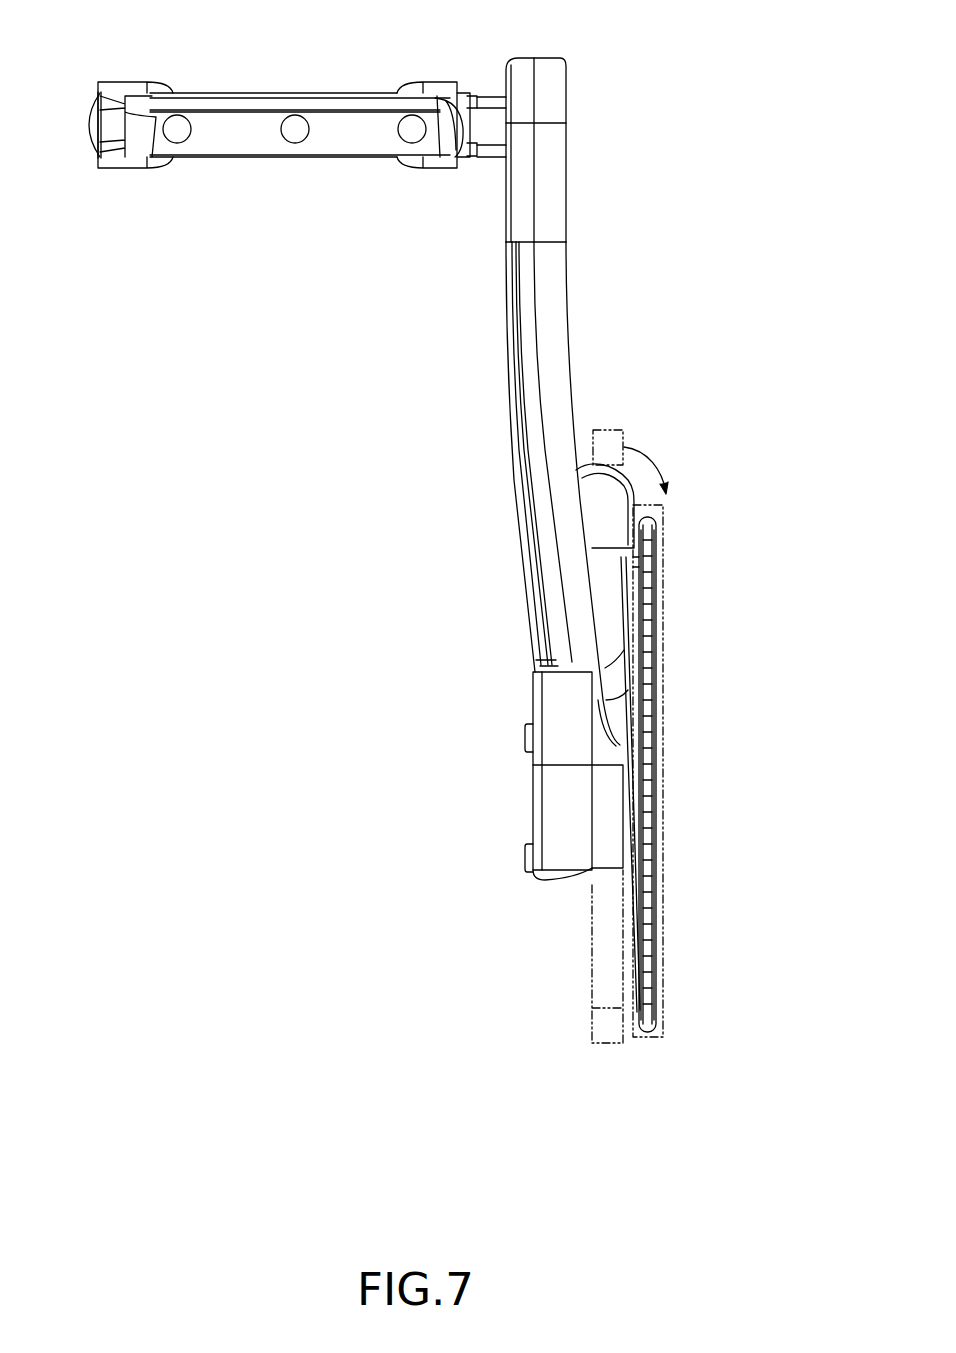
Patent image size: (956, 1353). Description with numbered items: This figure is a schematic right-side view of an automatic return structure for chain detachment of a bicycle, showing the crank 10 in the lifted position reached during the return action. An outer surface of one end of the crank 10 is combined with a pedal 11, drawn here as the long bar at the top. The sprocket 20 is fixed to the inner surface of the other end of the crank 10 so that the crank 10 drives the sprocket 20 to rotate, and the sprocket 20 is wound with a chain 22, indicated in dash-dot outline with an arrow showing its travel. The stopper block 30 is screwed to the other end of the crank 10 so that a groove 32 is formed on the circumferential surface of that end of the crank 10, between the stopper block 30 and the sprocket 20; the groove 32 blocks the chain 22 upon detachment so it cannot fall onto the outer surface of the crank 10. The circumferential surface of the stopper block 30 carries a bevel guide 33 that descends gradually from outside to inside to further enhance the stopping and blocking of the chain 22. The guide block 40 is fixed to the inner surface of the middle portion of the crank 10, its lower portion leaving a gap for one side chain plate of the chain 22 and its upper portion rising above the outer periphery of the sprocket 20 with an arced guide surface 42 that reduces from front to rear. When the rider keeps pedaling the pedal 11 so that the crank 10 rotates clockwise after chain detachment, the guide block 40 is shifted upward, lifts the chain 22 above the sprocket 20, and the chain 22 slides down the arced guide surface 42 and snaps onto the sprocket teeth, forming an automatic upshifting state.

The crank 10 is at (507, 317).
The pedal 11 is at (250, 92).
The sprocket 20 is at (648, 808).
The chain 22 is at (611, 440).
The stopper block 30 is at (550, 796).
The groove 32 is at (610, 870).
The bevel guide 33 is at (562, 878).
The guide block 40 is at (597, 512).
The arced guide surface 42 is at (617, 474).